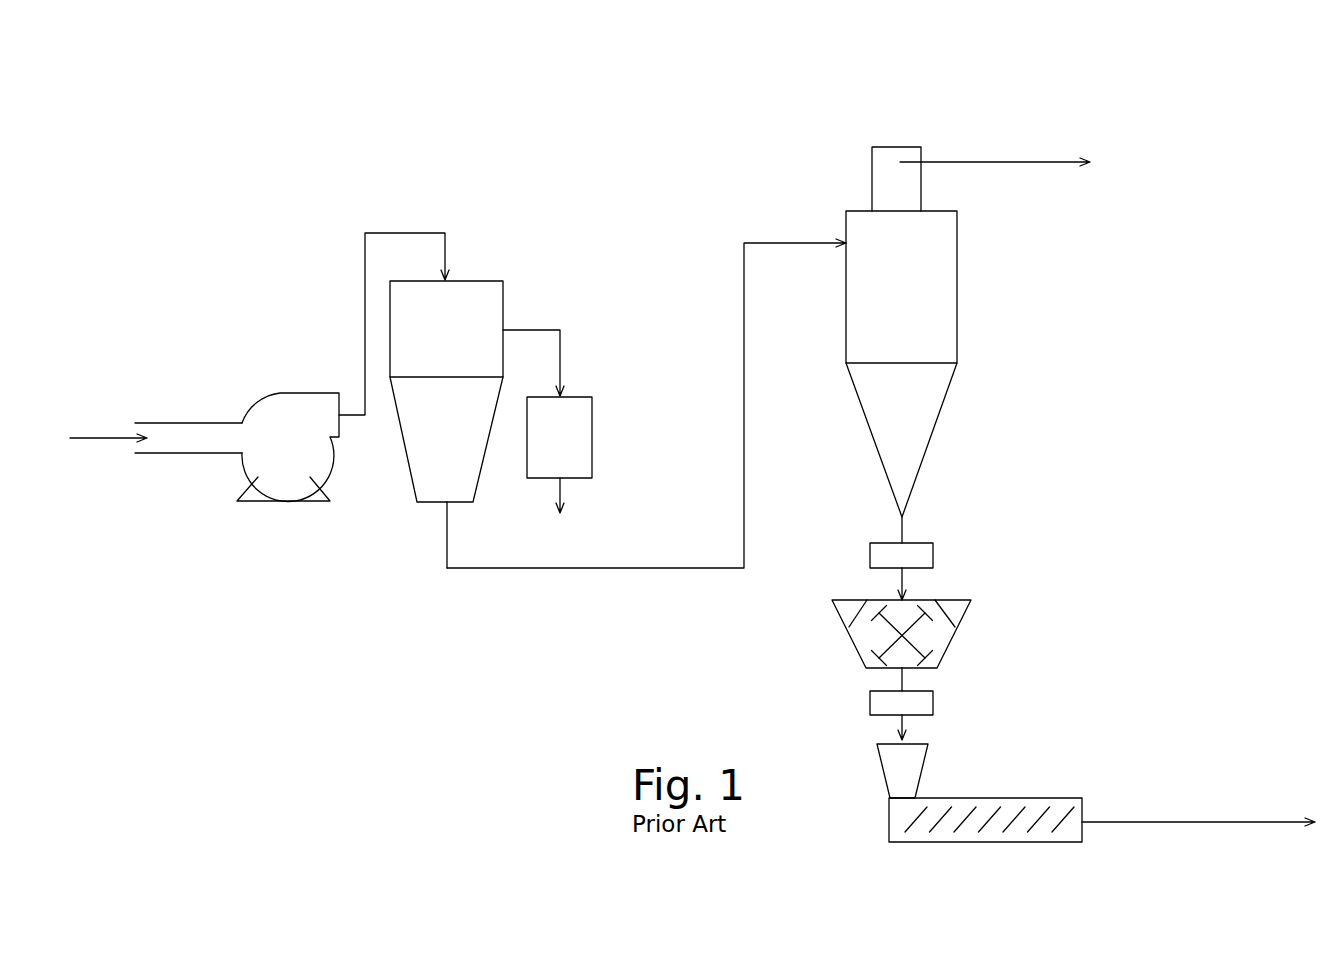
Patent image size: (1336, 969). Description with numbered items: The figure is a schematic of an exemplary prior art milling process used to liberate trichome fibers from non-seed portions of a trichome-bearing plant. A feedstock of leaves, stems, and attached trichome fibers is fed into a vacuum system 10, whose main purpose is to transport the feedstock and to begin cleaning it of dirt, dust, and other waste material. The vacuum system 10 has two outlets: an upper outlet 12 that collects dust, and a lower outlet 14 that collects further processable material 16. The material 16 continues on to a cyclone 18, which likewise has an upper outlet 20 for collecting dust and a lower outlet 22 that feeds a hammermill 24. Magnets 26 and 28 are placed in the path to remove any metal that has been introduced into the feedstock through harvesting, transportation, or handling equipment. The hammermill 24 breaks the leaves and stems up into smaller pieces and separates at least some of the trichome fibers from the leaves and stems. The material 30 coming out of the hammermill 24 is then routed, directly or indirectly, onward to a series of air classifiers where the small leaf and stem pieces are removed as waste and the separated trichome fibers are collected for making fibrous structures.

The vacuum system 10 is at (315, 295).
The upper outlet 12 is at (503, 328).
The lower outlet 14 is at (445, 503).
The further processable material 16 is at (558, 570).
The cyclone 18 is at (995, 284).
The upper outlet 20 is at (922, 155).
The lower outlet 22 is at (905, 517).
The hammermill 24 is at (974, 647).
The magnet 26 is at (933, 555).
The magnet 28 is at (933, 703).
The material 30 is at (1082, 818).